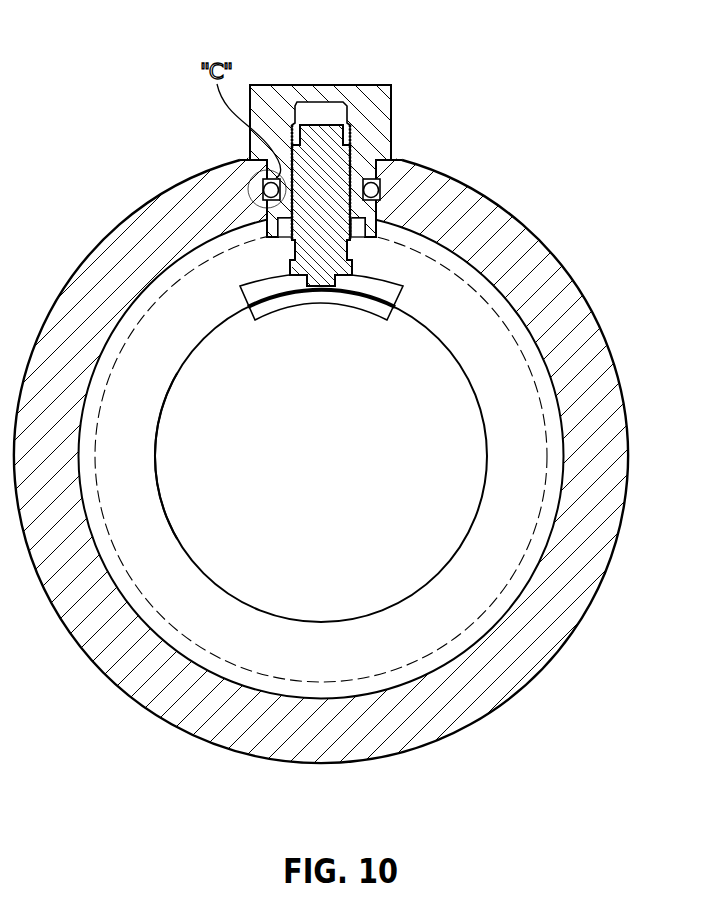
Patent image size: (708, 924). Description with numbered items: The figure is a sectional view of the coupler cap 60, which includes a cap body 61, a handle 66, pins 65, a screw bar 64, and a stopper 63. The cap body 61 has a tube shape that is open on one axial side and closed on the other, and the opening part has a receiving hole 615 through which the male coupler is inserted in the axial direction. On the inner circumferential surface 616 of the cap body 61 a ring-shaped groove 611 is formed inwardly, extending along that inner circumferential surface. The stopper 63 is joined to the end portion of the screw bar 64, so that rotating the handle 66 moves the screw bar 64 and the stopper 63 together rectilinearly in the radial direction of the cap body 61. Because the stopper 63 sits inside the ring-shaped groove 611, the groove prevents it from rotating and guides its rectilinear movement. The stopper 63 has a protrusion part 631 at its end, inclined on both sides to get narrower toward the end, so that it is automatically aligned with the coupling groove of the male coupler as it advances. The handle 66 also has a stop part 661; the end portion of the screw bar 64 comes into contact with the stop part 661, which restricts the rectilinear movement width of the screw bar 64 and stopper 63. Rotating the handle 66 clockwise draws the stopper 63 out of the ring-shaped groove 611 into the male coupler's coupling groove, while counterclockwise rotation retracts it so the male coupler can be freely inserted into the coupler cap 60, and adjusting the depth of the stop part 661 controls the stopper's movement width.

The coupler cap 60 is at (575, 178).
The cap body 61 is at (558, 259).
The ring-shaped groove 611 is at (400, 680).
The receiving hole 615 is at (293, 569).
The inner circumferential surface 616 is at (188, 553).
The stopper 63 is at (265, 292).
The protrusion part 631 is at (327, 300).
The screw bar 64 is at (327, 167).
The pins 65 is at (372, 190).
The handle 66 is at (370, 92).
The stop part 661 is at (318, 110).